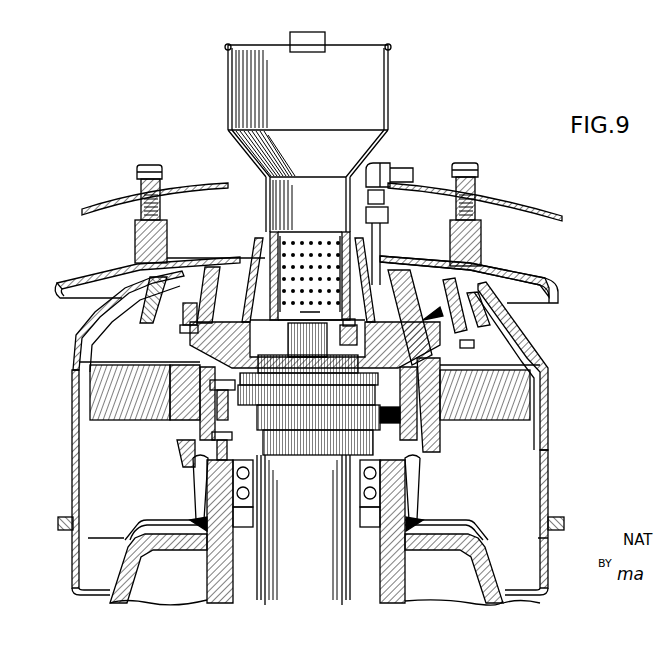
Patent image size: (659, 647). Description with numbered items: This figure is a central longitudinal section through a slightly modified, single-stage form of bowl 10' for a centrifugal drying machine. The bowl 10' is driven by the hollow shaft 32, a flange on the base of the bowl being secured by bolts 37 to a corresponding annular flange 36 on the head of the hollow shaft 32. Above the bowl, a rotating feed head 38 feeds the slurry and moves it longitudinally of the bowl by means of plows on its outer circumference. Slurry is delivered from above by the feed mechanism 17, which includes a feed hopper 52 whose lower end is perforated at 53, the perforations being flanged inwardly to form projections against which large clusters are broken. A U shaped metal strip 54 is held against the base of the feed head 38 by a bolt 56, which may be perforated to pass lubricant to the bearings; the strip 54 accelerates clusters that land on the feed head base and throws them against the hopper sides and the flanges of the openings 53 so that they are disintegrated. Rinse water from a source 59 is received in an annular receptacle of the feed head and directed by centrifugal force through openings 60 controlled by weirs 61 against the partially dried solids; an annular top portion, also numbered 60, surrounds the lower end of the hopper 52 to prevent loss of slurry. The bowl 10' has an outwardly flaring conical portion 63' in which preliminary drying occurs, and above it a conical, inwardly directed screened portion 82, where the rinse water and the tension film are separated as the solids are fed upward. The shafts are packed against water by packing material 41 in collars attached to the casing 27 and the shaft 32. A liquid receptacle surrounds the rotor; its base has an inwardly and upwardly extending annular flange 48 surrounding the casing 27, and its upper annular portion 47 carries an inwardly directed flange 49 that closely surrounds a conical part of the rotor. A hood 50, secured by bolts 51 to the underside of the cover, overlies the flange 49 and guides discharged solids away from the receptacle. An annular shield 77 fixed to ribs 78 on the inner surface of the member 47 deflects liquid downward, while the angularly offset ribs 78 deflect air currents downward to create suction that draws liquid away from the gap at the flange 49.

The feed hopper 52 is at (388, 101).
The feed mechanism 17 is at (262, 171).
The bolts 51 is at (478, 169).
The perforations 53 is at (272, 232).
The U shaped metal strip 54 is at (335, 252).
The rinse water source 59 is at (381, 247).
The rotating feed head 38 is at (212, 270).
The weirs 61 is at (196, 304).
The rinse water openings 60 is at (185, 313).
The annular shield 77 is at (97, 314).
The hood 50 is at (547, 281).
The screened portion 82 is at (447, 298).
The inwardly directed flange 49 is at (526, 334).
The outwardly flaring conical portion 63' is at (475, 353).
The bowl 10' is at (492, 325).
The bolt 56 is at (318, 318).
The packing material 41 is at (430, 440).
The upper annular portion 47 is at (549, 461).
The annular flange 48 is at (426, 499).
The ribs 78 is at (91, 421).
The bolts 37 is at (193, 421).
The annular flange 36 is at (185, 447).
The hollow shaft 32 is at (319, 585).
The casing 27 is at (431, 600).